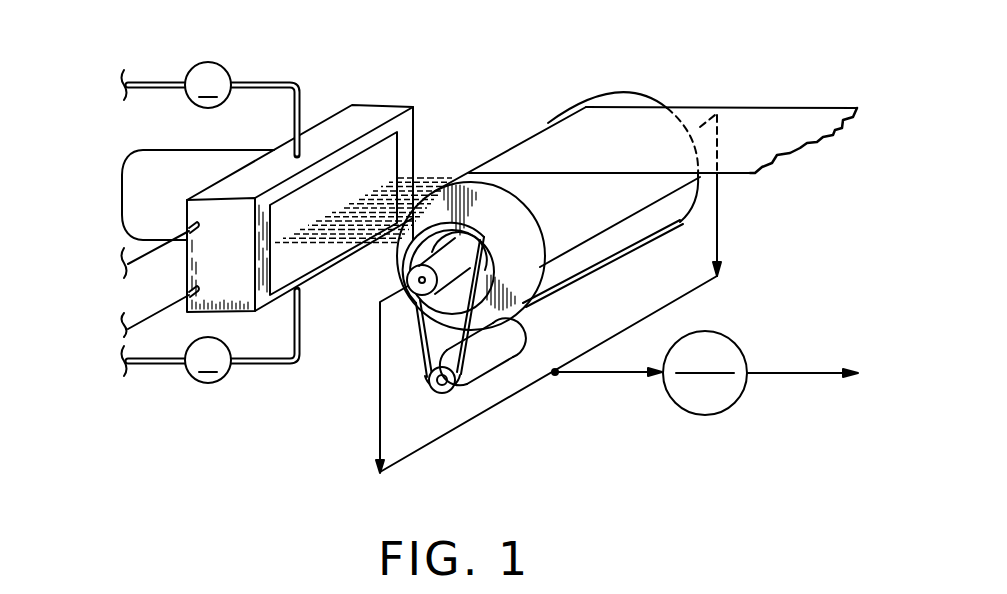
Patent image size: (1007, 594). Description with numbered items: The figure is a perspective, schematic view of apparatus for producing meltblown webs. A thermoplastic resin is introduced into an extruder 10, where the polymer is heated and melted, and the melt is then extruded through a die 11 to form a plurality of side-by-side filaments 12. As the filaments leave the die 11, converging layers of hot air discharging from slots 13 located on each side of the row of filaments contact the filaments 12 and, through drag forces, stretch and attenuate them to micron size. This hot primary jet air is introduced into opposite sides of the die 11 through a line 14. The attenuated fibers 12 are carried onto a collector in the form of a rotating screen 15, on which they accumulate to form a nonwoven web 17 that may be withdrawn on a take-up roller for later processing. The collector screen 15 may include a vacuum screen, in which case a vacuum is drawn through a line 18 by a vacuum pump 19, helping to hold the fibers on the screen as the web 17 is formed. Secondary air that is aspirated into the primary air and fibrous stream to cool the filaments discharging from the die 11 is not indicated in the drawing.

The extruder 10 is at (178, 173).
The die 11 is at (375, 113).
The filaments 12 is at (455, 173).
The slots 13 is at (435, 173).
The line 14 is at (289, 82).
The rotating screen 15 is at (612, 212).
The nonwoven web 17 is at (737, 122).
The line 18 is at (380, 415).
The vacuum pump 19 is at (725, 410).